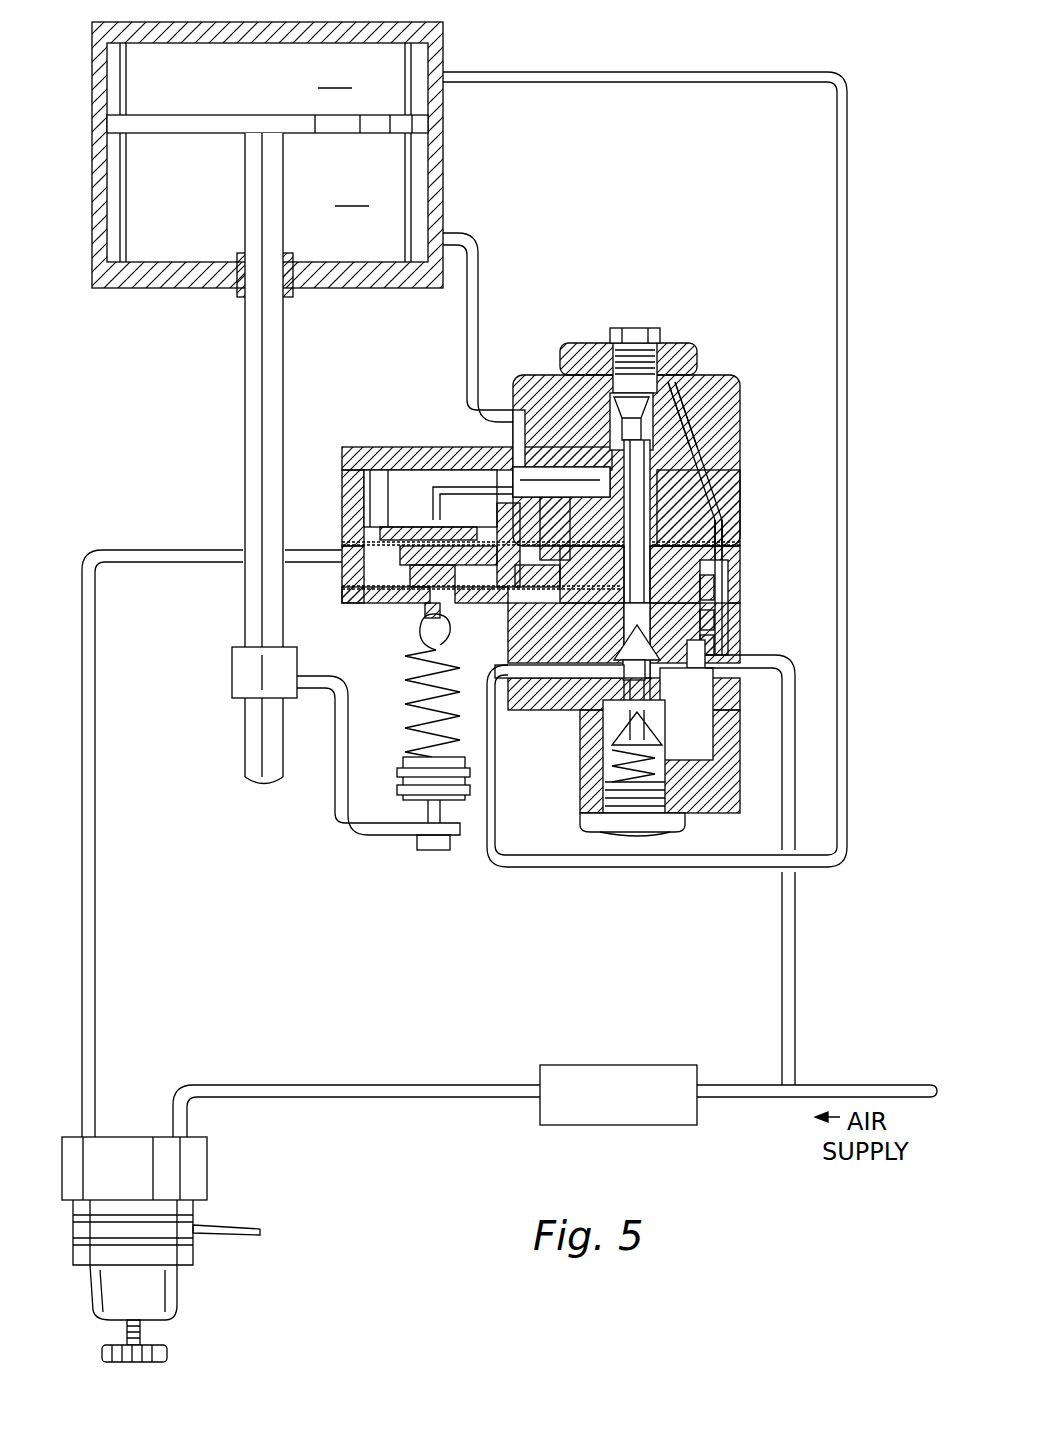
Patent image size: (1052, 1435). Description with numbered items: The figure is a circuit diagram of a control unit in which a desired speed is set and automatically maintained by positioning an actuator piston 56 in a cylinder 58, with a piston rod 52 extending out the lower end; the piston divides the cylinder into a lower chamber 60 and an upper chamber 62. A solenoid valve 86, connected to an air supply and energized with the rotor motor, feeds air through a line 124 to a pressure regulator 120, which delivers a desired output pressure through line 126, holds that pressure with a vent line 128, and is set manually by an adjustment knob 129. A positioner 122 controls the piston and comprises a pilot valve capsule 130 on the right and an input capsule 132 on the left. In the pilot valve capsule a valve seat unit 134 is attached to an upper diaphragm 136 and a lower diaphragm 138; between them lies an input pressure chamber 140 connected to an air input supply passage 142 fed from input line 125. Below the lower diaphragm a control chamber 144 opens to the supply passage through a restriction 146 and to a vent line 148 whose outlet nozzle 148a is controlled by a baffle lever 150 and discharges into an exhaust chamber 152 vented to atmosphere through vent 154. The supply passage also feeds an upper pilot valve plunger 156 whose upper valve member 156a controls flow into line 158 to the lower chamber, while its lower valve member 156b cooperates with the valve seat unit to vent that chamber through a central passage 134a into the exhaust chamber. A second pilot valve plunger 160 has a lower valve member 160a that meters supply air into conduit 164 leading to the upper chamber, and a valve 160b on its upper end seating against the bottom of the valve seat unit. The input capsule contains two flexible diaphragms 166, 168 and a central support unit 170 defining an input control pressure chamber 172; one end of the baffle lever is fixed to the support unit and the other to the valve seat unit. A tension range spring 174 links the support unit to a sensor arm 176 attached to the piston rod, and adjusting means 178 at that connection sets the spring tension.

The piston rod 52 is at (247, 740).
The actuator piston 56 is at (430, 127).
The cylinder 58 is at (443, 162).
The lower chamber 60 is at (265, 152).
The upper chamber 62 is at (267, 66).
The solenoid valve 86 is at (640, 1125).
The pressure regulator 120 is at (195, 1158).
The positioner 122 is at (742, 412).
The line 124 is at (356, 1085).
The input line 125 is at (797, 965).
The output line 126 is at (96, 880).
The vent line 128 is at (237, 1225).
The adjustment knob 129 is at (170, 1352).
The pilot valve capsule 130 is at (745, 555).
The input capsule 132 is at (345, 500).
The valve seat unit 134 is at (720, 475).
The central passage 134a is at (705, 450).
The upper diaphragm 136 is at (730, 500).
The lower diaphragm 138 is at (725, 582).
The input pressure chamber 140 is at (748, 553).
The air input supply passage 142 is at (752, 654).
The control chamber 144 is at (720, 605).
The restriction 146 is at (725, 628).
The vent line 148 is at (510, 600).
The outlet nozzle 148a is at (537, 497).
The baffle lever 150 is at (490, 480).
The exhaust chamber 152 is at (402, 488).
The vent 154 is at (345, 490).
The upper pilot valve plunger 156 is at (690, 352).
The upper valve member 156a is at (628, 385).
The lower valve member 156b is at (618, 418).
The line 158 is at (490, 295).
The second pilot valve plunger 160 is at (600, 695).
The lower valve member 160a is at (700, 770).
The valve 160b is at (622, 662).
The conduit 164 is at (632, 868).
The flexible diaphragm 166 is at (350, 543).
The flexible diaphragm 168 is at (355, 608).
The central support unit 170 is at (425, 630).
The input control pressure chamber 172 is at (345, 587).
The tension range spring 174 is at (412, 700).
The sensor arm 176 is at (343, 815).
The adjusting means 178 is at (405, 775).